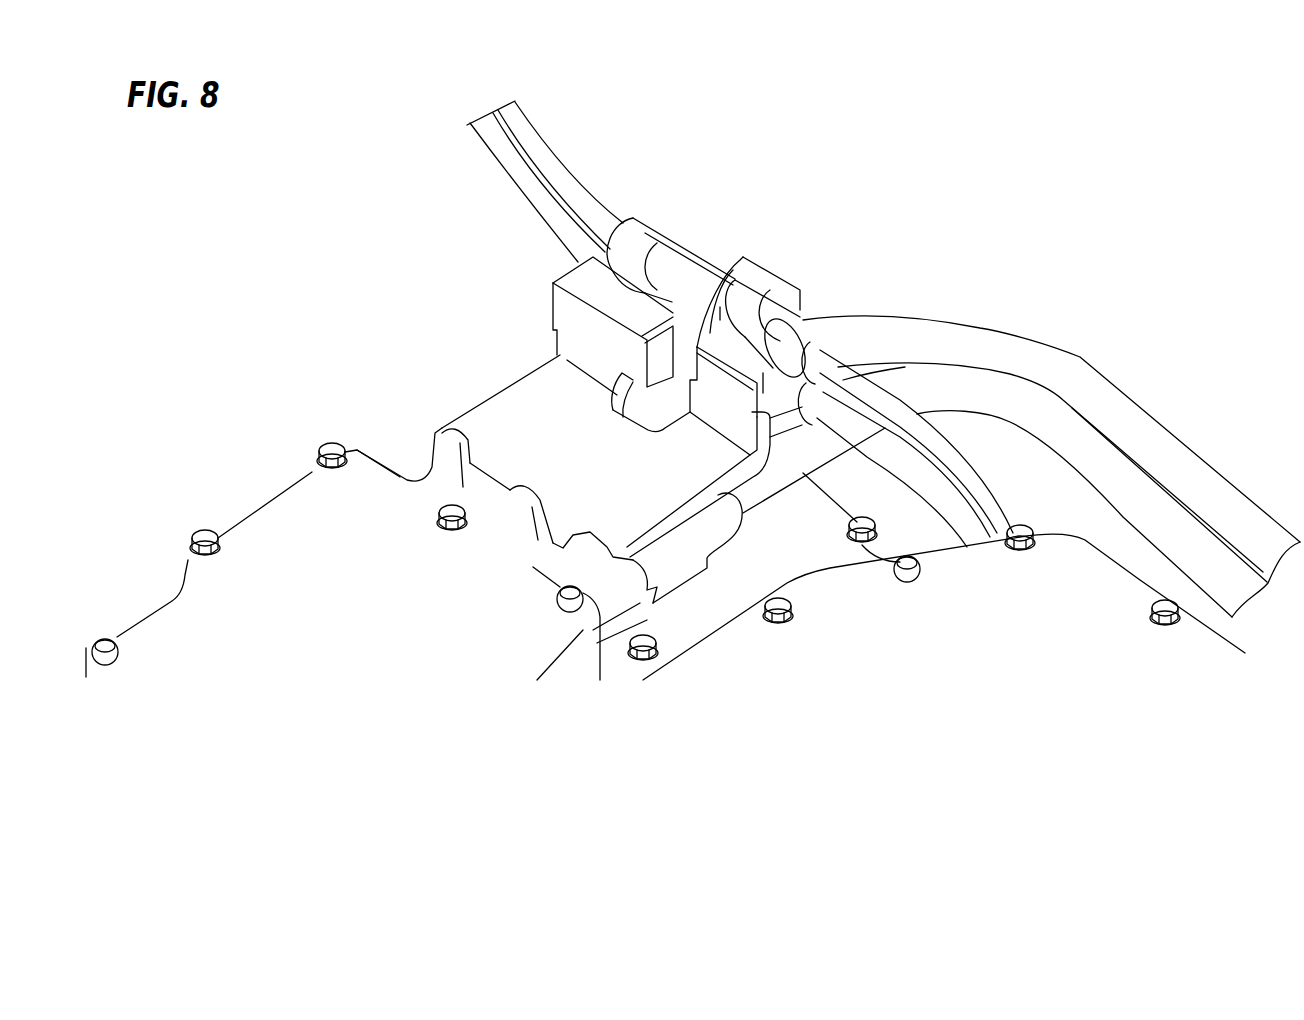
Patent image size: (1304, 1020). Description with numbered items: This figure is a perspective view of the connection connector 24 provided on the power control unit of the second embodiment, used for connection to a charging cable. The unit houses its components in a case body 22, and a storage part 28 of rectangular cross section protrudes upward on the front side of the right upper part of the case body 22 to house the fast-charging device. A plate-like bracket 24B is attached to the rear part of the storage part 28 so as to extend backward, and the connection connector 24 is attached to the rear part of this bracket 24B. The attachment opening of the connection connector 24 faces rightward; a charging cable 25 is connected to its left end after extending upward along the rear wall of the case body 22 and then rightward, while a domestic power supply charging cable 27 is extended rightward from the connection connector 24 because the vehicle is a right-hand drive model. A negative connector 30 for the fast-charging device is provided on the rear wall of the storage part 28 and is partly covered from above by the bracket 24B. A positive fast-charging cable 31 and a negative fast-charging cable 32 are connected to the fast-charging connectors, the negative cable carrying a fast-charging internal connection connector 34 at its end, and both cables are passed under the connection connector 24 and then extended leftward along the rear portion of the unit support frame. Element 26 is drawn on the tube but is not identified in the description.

The case body 22 is at (1032, 660).
The connection connector 24 is at (777, 322).
The bracket 24B is at (500, 410).
The charging cable 25 is at (955, 460).
The clamp 26 is at (643, 233).
The domestic power supply charging cable 27 is at (547, 163).
The storage part 28 is at (266, 556).
The negative connector 30 is at (613, 603).
The positive fast-charging cable 31 is at (1103, 397).
The negative fast-charging cable 32 is at (1145, 508).
The fast-charging internal connection connector 34 is at (675, 575).